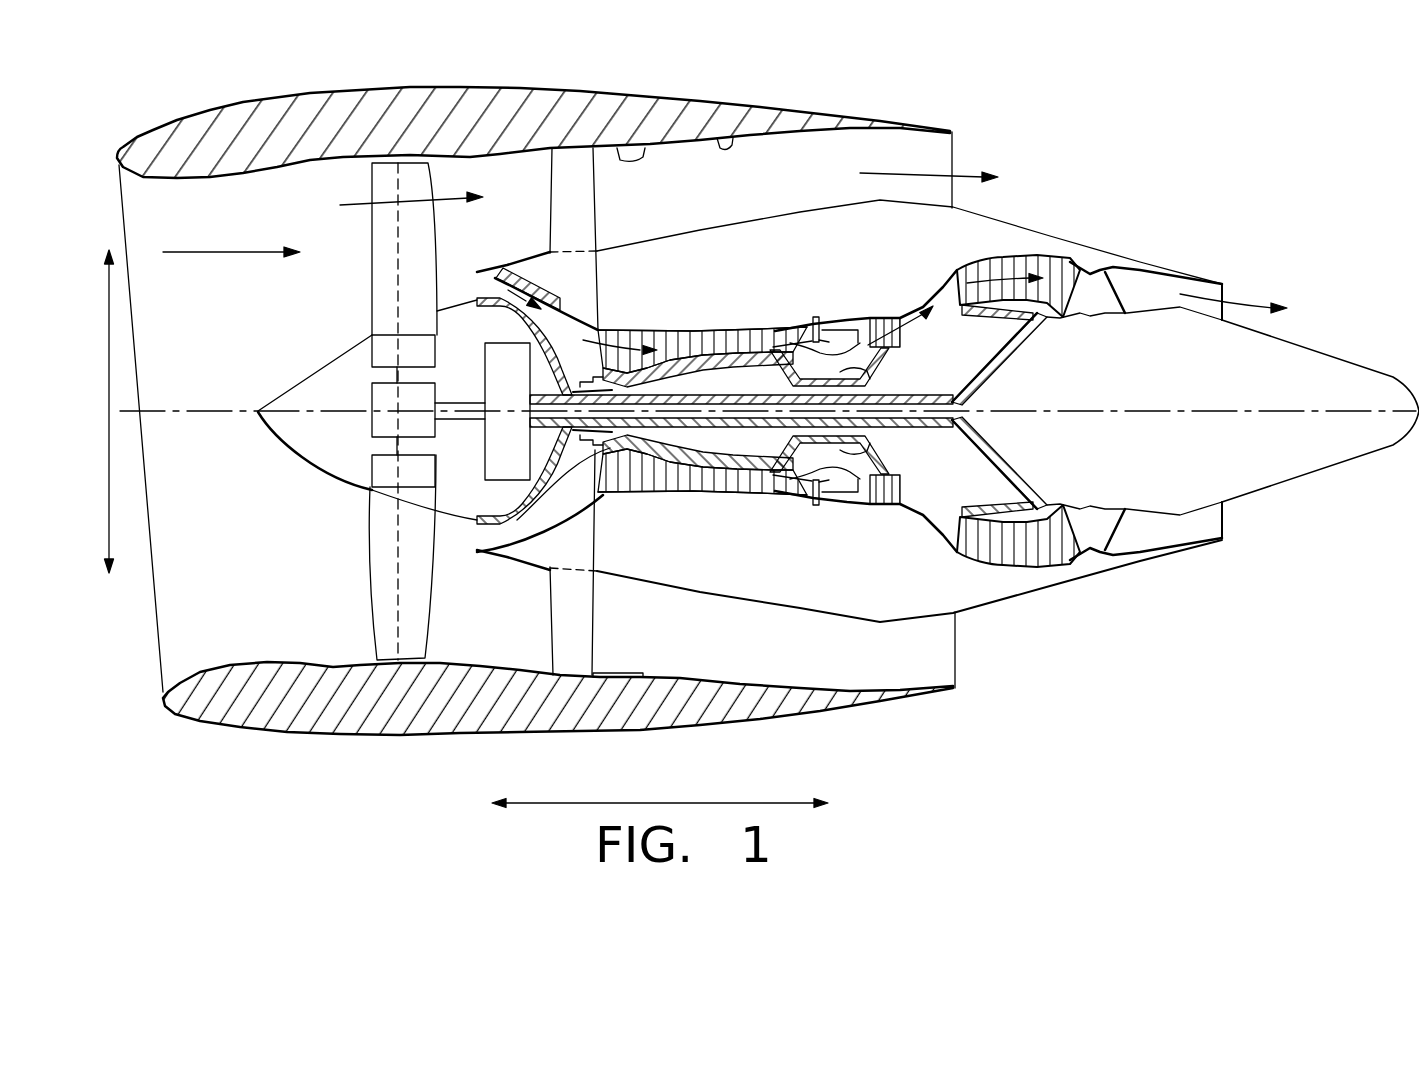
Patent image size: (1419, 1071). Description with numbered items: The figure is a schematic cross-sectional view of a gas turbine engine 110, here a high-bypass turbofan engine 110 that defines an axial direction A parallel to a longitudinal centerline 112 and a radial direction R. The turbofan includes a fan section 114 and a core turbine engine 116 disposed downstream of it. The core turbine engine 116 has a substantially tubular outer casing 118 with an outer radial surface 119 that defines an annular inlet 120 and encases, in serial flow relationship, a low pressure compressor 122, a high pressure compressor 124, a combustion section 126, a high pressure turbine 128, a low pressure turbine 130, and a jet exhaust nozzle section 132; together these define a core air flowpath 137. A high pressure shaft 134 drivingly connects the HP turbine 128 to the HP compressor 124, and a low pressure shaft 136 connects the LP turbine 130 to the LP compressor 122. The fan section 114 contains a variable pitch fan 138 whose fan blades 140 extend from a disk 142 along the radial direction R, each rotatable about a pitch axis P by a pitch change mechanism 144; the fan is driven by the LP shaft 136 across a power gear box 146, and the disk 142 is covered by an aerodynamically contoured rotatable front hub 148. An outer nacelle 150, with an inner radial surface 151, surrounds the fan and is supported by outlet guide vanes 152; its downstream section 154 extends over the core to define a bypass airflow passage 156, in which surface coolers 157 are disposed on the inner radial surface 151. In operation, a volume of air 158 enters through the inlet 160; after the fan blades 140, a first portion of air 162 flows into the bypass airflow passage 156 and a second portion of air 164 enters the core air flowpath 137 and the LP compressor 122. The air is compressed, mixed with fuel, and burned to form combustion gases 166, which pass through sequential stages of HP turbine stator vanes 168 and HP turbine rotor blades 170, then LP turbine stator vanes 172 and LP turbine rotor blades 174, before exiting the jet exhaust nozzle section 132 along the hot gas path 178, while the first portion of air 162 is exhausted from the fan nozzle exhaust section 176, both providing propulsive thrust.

The gas turbine engine 110 is at (1123, 124).
The longitudinal centerline 112 is at (1156, 410).
The fan section 114 is at (274, 204).
The core turbine engine 116 is at (787, 268).
The outer casing 118 is at (787, 607).
The outer radial surface 119 is at (737, 228).
The annular inlet 120 is at (488, 538).
The low pressure compressor 122 is at (527, 550).
The high pressure compressor 124 is at (633, 477).
The combustion section 126 is at (833, 486).
The high pressure turbine 128 is at (907, 492).
The low pressure turbine 130 is at (1056, 566).
The jet exhaust nozzle section 132 is at (1120, 542).
The high pressure shaft 134 is at (873, 370).
The low pressure shaft 136 is at (920, 398).
The core air flowpath 137 is at (569, 500).
The variable pitch fan 138 is at (322, 466).
The fan blades 140 is at (367, 590).
The disk 142 is at (386, 350).
The pitch change mechanism 144 is at (370, 397).
The power gear box 146 is at (505, 353).
The rotatable front hub 148 is at (277, 431).
The outer nacelle 150 is at (422, 737).
The inner radial surface 151 is at (730, 138).
The outlet guide vanes 152 is at (597, 195).
The downstream section 154 is at (840, 112).
The bypass airflow passage 156 is at (770, 190).
The surface coolers 157 is at (645, 148).
The volume of air 158 is at (227, 252).
The inlet 160 is at (163, 675).
The first portion of air 162 is at (387, 200).
The second portion of air 164 is at (460, 283).
The combustion gases 166 is at (1003, 293).
The HP turbine stator vanes 168 is at (837, 483).
The HP turbine rotor blades 170 is at (873, 464).
The LP turbine stator vanes 172 is at (973, 547).
The LP turbine rotor blades 174 is at (977, 553).
The fan nozzle exhaust section 176 is at (940, 150).
The hot gas path 178 is at (940, 290).
The axial direction A is at (660, 803).
The pitch axis P is at (447, 124).
The radial direction R is at (110, 385).